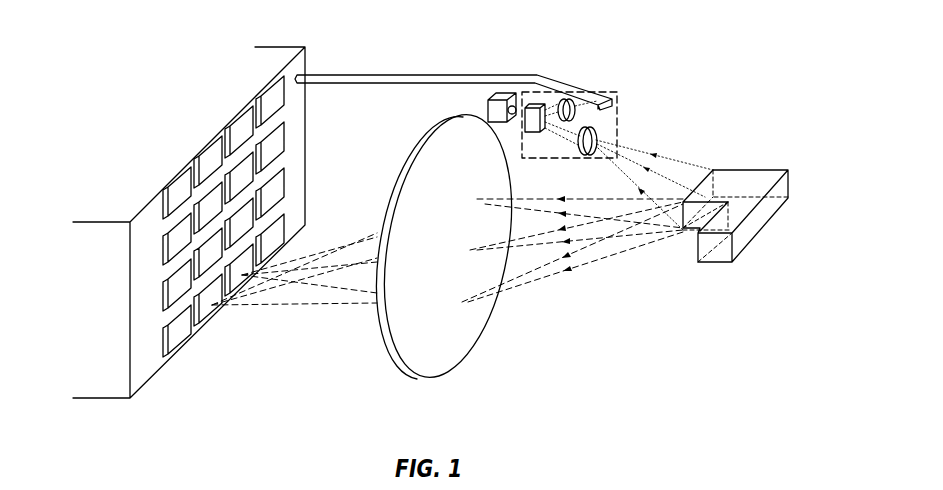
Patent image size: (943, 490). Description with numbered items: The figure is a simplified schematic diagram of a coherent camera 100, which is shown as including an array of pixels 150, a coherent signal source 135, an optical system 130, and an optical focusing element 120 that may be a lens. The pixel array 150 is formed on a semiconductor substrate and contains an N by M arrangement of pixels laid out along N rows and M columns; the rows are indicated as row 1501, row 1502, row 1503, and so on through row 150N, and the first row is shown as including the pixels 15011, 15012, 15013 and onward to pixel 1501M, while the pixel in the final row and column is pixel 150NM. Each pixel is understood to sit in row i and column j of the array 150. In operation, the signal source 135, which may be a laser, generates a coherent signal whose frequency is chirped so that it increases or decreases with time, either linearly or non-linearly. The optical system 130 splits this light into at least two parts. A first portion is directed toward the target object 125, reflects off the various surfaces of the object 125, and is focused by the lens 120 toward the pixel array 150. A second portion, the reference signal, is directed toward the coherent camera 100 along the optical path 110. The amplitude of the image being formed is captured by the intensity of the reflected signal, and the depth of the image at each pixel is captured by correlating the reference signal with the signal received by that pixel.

The coherent camera 100 is at (646, 34).
The optical path 110 is at (496, 72).
The optical focusing element 120 is at (453, 345).
The target object 125 is at (748, 178).
The optical system 130 is at (620, 123).
The coherent signal source 135 is at (487, 108).
The array of pixels 150 is at (165, 360).
The row 1 of pixels 1501 is at (308, 62).
The row 2 of pixels 1502 is at (306, 130).
The row 3 of pixels 1503 is at (306, 172).
The row N of pixels 150N is at (306, 214).
The pixel in row N and column M 150NM is at (280, 248).
The pixel in row 1 and column 1 15011 is at (178, 173).
The pixel in row 1 and column 2 15012 is at (212, 145).
The pixel in row 1 and column 3 15013 is at (242, 112).
The pixel in row 1 and column M 1501M is at (273, 80).